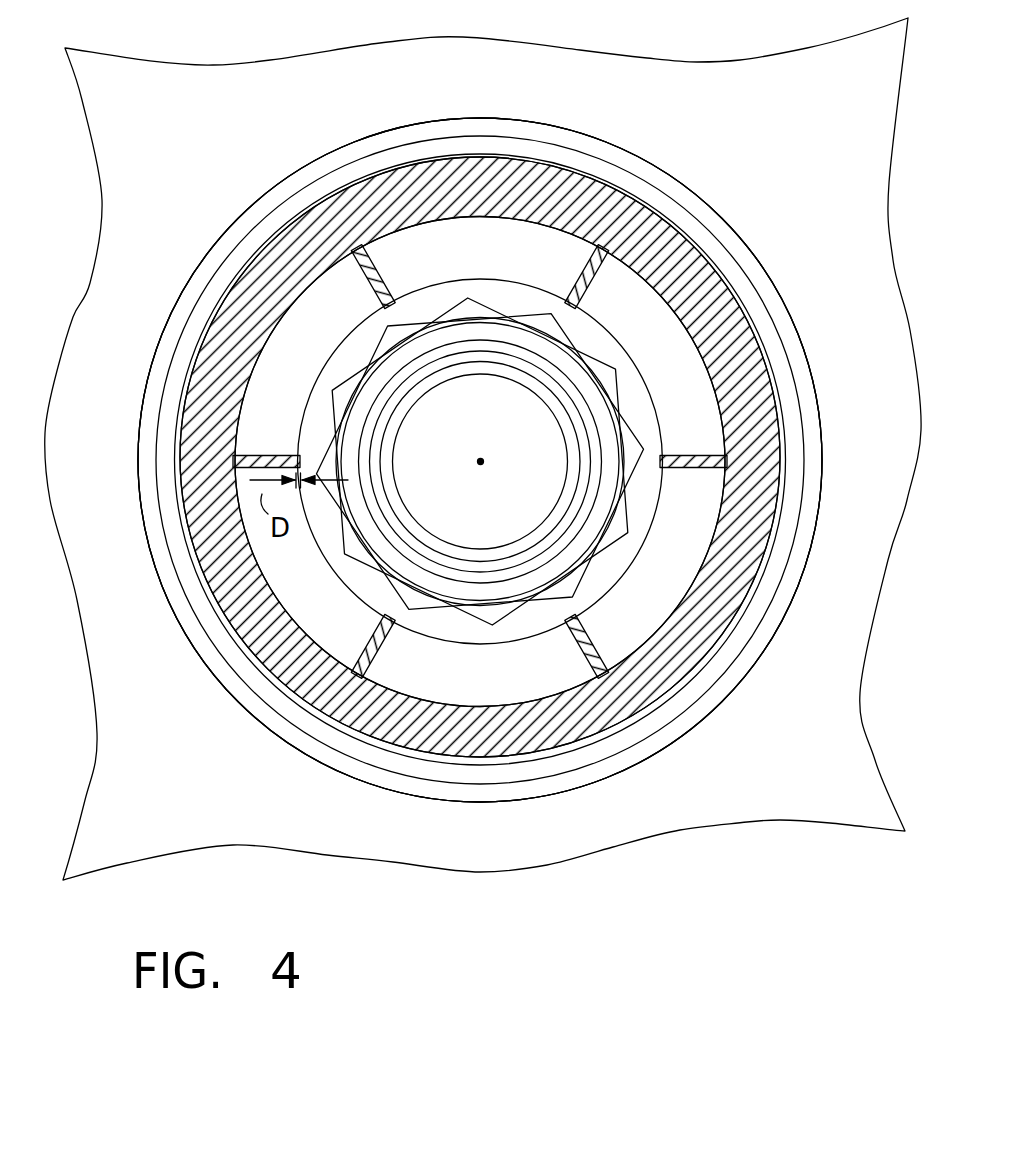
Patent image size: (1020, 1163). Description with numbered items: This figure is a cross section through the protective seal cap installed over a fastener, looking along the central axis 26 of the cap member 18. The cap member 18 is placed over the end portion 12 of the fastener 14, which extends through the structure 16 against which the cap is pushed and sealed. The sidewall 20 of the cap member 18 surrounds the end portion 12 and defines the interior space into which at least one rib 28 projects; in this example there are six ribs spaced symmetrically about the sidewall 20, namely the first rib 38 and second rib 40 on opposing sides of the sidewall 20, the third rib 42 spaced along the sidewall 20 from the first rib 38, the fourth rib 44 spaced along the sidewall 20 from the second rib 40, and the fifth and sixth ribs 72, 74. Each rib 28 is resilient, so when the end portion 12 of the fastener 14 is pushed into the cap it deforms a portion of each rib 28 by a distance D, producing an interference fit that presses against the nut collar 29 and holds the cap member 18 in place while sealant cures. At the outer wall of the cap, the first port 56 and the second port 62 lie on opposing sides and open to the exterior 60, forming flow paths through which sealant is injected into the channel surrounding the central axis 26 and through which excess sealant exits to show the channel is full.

The end portion 12 is at (440, 440).
The fastener 14 is at (513, 332).
The structure 16 is at (278, 107).
The cap member 18 is at (337, 242).
The sidewall 20 is at (520, 178).
The central axis 26 is at (482, 458).
The rib 28 is at (408, 465).
The nut collar 29 is at (743, 312).
The first rib 38 is at (668, 452).
The second rib 40 is at (247, 453).
The third rib 42 is at (380, 628).
The fourth rib 44 is at (590, 290).
The first port 56 is at (825, 455).
The exterior 60 is at (158, 606).
The second port 62 is at (140, 447).
The fifth rib 72 is at (584, 652).
The sixth rib 74 is at (368, 286).